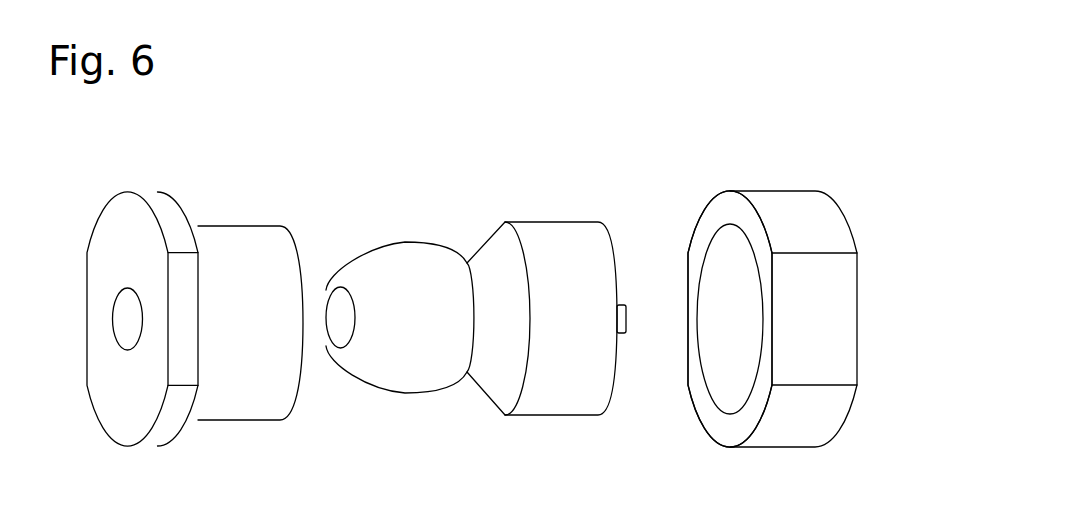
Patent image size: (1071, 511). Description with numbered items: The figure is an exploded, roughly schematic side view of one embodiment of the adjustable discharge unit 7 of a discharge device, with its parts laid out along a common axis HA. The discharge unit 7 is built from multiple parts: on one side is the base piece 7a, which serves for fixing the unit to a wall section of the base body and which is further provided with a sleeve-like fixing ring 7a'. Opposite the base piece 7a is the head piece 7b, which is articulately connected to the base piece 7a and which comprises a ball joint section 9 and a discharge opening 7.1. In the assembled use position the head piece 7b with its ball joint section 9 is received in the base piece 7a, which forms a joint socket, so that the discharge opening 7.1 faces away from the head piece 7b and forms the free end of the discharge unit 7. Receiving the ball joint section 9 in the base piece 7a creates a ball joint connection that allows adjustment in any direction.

The adjustable discharge unit 7 is at (714, 120).
The base piece 7a is at (208, 292).
The head piece 7b is at (540, 233).
The sleeve-like fixing ring 7a' is at (772, 281).
The discharge opening 7.1 is at (619, 307).
The ball joint section 9 is at (409, 227).
The main axis HA is at (60, 319).